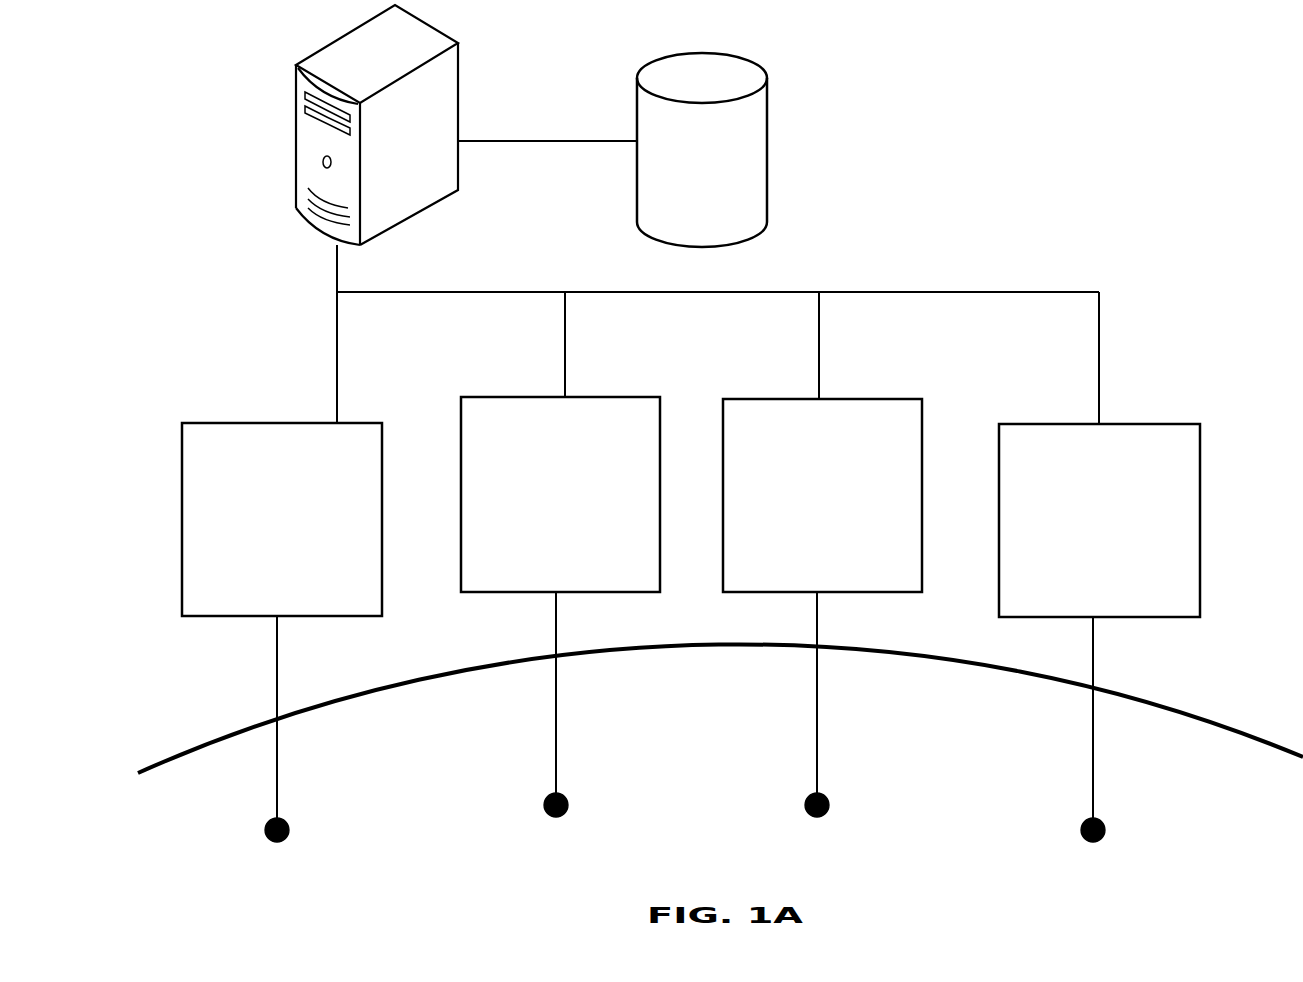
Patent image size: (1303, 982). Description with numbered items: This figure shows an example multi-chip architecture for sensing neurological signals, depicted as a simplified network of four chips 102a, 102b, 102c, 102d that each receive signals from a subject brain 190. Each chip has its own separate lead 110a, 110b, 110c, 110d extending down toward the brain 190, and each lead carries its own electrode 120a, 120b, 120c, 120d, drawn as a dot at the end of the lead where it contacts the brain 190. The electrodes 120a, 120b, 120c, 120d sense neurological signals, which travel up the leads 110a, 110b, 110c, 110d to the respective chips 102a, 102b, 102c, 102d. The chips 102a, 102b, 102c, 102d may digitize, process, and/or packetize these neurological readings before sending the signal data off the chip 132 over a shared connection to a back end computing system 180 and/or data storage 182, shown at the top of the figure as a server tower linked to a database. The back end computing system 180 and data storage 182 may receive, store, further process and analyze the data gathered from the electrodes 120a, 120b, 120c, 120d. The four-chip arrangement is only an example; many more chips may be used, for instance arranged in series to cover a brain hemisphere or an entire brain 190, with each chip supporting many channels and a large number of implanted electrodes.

The back end computing system 180 is at (305, 226).
The data storage 182 is at (645, 233).
The off-chip signal path 132 is at (337, 357).
The chip 102a is at (195, 618).
The chip 102b is at (472, 595).
The chip 102c is at (880, 398).
The chip 102d is at (1155, 422).
The lead 110a is at (275, 672).
The lead 110b is at (553, 688).
The lead 110c is at (815, 695).
The lead 110d is at (1091, 722).
The electrode 120a is at (272, 840).
The electrode 120b is at (552, 815).
The electrode 120c is at (814, 815).
The electrode 120d is at (1089, 842).
The subject brain 190 is at (160, 765).